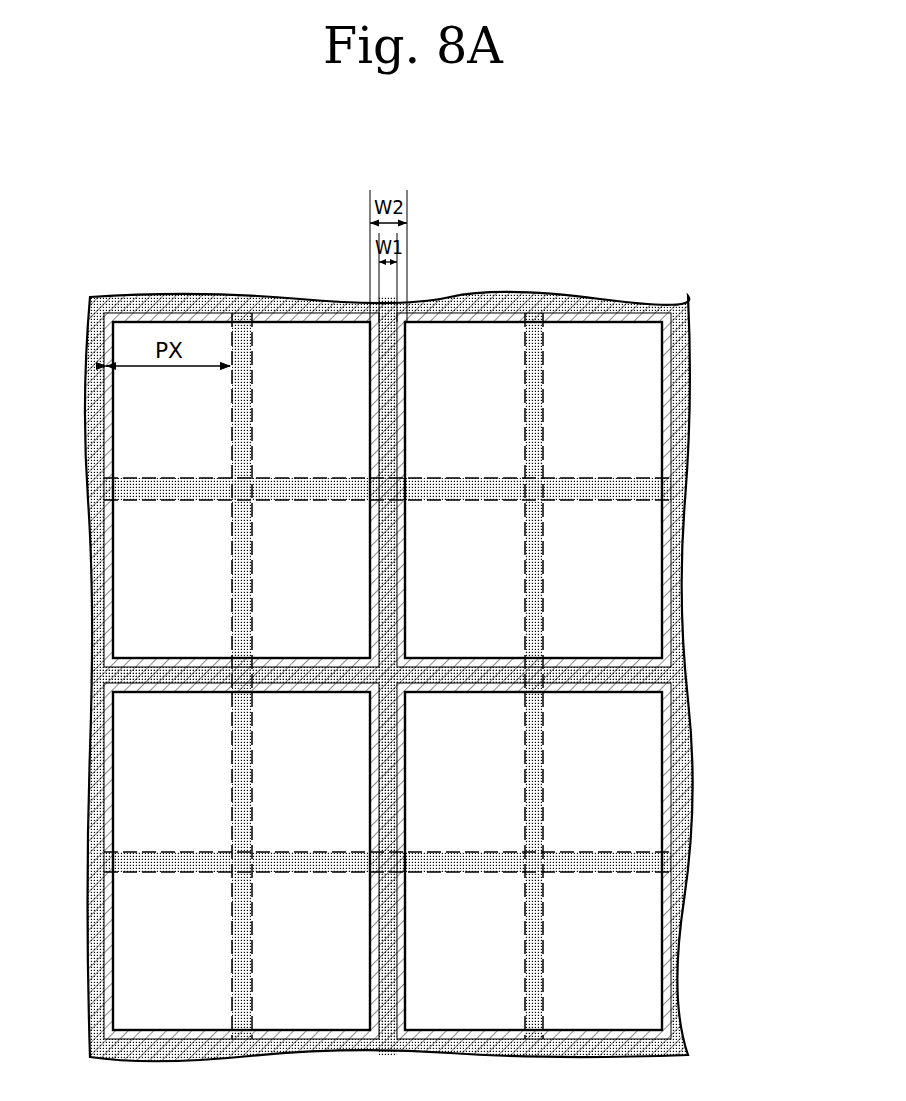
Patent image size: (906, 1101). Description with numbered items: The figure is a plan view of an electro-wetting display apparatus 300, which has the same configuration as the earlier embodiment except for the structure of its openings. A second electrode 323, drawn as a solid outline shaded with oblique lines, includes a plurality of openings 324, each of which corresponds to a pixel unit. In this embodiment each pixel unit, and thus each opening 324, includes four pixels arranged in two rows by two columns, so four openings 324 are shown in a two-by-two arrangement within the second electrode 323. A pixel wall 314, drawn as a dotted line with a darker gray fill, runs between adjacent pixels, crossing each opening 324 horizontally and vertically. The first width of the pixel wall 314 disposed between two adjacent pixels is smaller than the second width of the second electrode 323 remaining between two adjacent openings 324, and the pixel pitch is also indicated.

The electro-wetting display apparatus 300 is at (122, 215).
The second electrode 323 is at (587, 315).
The opening 324 is at (640, 403).
The pixel wall 314 is at (688, 487).